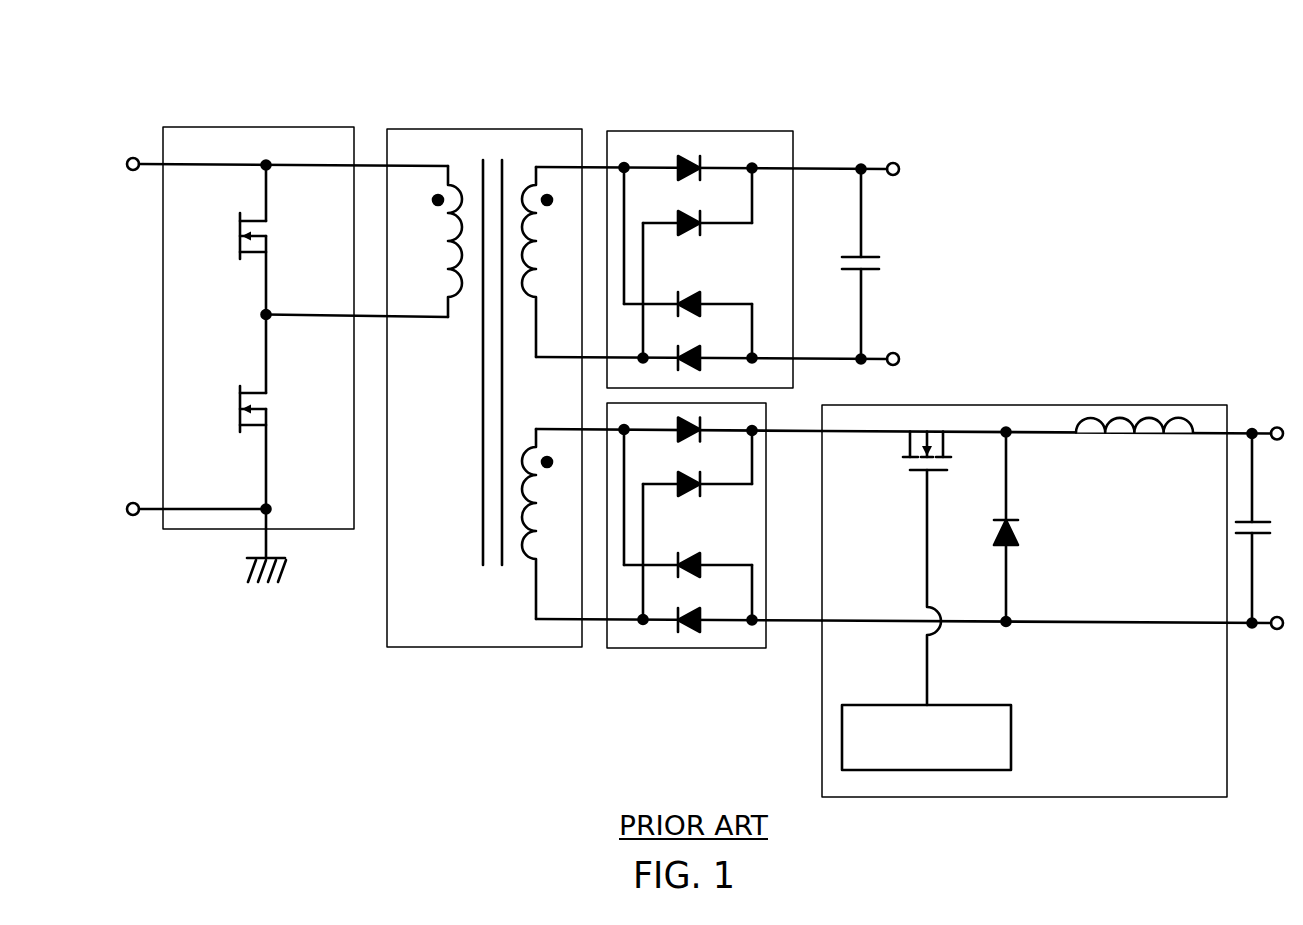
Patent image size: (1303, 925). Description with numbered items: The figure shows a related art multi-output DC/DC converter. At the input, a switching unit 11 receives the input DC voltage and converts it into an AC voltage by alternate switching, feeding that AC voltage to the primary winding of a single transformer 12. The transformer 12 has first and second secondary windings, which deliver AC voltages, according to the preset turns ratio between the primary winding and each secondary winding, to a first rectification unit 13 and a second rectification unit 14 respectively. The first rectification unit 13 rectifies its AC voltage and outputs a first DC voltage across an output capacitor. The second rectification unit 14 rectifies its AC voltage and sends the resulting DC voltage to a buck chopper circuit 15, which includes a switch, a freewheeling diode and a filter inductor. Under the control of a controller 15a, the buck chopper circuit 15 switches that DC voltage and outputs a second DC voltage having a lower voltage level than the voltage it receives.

The switching unit 11 is at (255, 127).
The transformer 12 is at (478, 129).
The first rectification unit 13 is at (698, 131).
The second rectification unit 14 is at (658, 648).
The buck chopper circuit 15 is at (1060, 405).
The controller 15a is at (1011, 738).